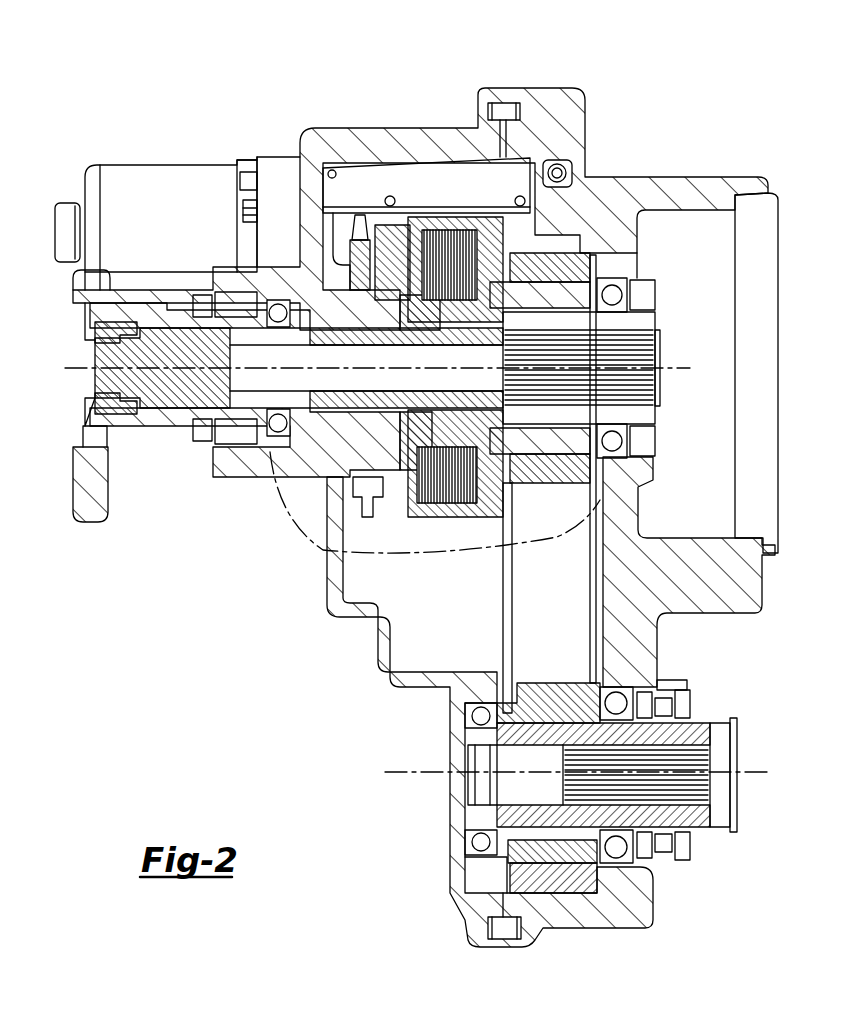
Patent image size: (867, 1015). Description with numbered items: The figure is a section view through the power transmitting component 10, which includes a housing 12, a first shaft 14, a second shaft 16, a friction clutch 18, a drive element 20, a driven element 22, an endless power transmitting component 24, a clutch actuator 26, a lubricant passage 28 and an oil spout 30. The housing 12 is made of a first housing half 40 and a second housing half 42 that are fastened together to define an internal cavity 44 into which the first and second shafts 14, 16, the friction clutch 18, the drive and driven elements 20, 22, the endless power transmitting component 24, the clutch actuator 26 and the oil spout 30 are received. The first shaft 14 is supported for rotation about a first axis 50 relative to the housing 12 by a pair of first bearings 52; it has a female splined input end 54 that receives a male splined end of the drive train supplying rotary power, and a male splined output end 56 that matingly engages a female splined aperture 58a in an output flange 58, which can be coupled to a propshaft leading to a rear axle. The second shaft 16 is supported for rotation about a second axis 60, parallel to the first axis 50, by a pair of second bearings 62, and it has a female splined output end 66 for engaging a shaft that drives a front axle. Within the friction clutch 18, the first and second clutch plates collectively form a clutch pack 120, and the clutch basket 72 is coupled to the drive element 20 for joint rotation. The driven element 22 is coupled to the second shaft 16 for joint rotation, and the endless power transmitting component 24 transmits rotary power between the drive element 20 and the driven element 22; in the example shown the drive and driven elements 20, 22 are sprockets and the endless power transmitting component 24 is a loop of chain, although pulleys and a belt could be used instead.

The power transmitting component 10 is at (682, 95).
The housing 12 is at (418, 25).
The first shaft 14 is at (635, 323).
The second shaft 16 is at (700, 737).
The friction clutch 18 is at (497, 250).
The drive element 20 is at (560, 270).
The driven element 22 is at (555, 693).
The endless power transmitting component 24 is at (527, 603).
The clutch actuator 26 is at (372, 225).
The lubricant passage 28 is at (423, 320).
The oil spout 30 is at (417, 430).
The first housing half 40 is at (490, 97).
The second housing half 42 is at (543, 97).
The internal cavity 44 is at (373, 590).
The first axis 50 is at (163, 325).
The first bearings 52 is at (622, 293).
The input end 54 is at (653, 390).
The output end 56 is at (166, 400).
The output flange 58 is at (88, 497).
The female splined aperture 58a is at (147, 407).
The second axis 60 is at (403, 778).
The second bearings 62 is at (613, 703).
The output end 66 is at (703, 798).
The clutch basket 72 is at (500, 482).
The clutch pack 120 is at (453, 240).